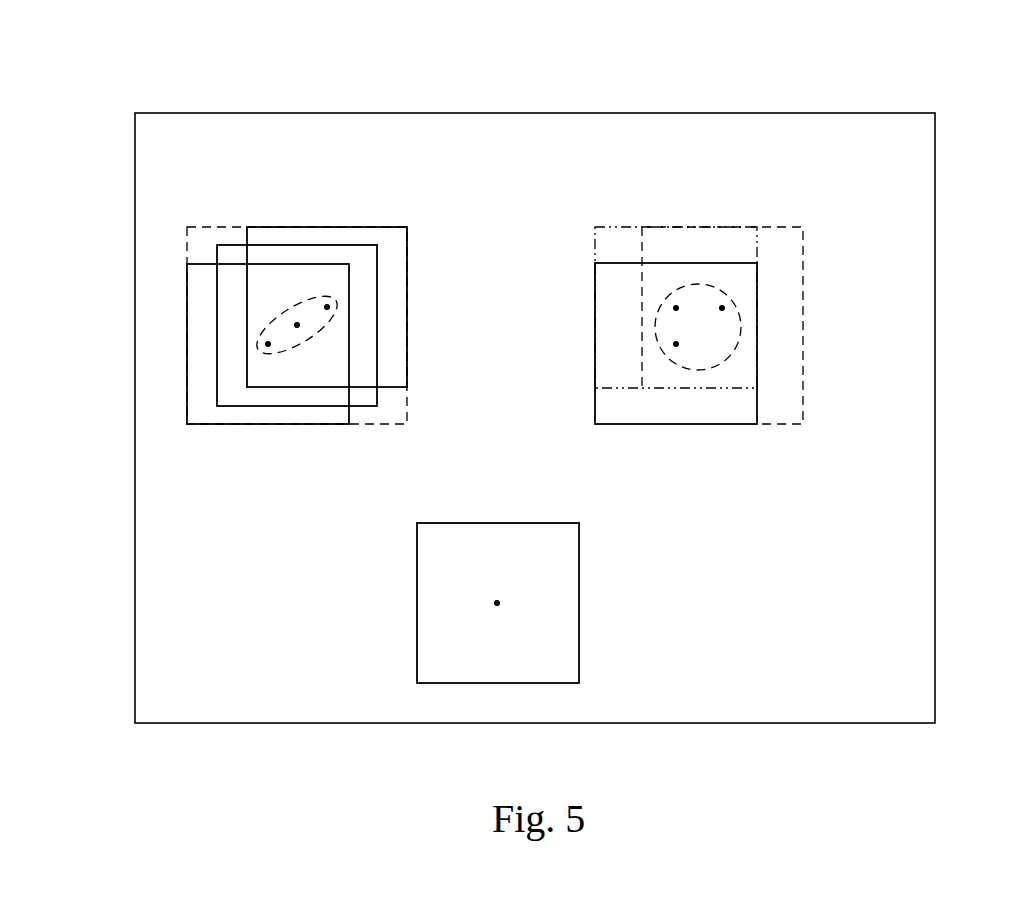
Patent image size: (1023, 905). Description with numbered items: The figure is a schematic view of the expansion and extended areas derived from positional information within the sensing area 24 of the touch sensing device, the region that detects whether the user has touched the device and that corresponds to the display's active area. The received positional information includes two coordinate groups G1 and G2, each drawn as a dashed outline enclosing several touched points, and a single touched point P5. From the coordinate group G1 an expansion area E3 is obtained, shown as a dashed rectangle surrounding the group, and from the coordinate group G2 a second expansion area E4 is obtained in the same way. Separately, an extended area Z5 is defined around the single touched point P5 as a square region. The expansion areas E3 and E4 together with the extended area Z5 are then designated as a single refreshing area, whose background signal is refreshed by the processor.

The sensing area 24 is at (858, 113).
The expansion area E3 is at (210, 225).
The coordinate group G1 is at (297, 303).
The coordinate group G2 is at (698, 285).
The expansion area E4 is at (803, 407).
The extended area Z5 is at (532, 523).
The touched point P5 is at (497, 603).